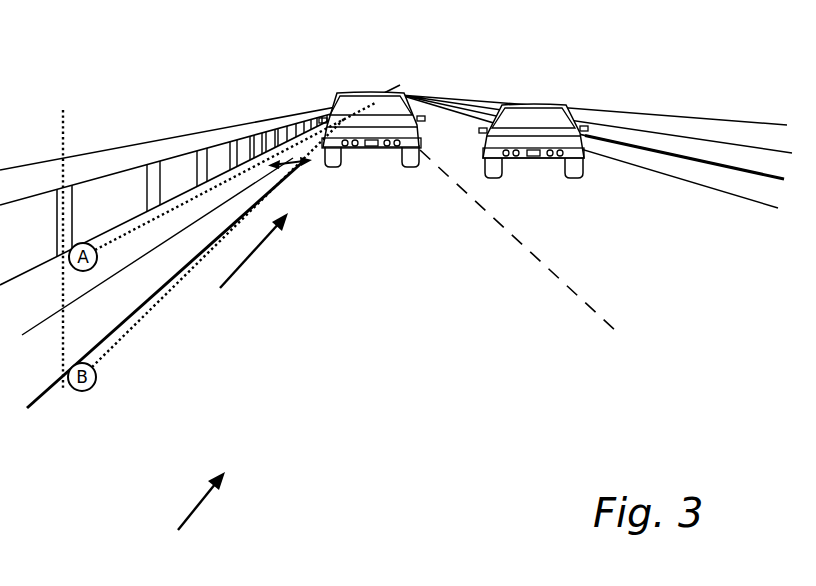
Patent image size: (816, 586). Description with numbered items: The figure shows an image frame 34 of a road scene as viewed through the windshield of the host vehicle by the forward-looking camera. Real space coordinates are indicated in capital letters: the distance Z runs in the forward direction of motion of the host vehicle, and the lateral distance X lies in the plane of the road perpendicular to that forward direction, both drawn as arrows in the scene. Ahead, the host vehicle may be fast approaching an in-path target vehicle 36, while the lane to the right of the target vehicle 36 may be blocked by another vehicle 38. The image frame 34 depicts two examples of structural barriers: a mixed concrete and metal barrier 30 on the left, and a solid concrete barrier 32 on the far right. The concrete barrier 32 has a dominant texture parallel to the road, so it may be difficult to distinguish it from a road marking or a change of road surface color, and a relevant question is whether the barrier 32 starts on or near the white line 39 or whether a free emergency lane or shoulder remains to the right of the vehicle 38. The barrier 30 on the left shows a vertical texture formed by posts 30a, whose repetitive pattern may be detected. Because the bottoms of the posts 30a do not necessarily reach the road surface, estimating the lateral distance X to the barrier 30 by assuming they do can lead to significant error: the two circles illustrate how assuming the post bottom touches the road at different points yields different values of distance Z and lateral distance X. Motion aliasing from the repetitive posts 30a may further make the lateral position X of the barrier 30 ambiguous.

The barrier 30 is at (204, 126).
The posts 30a is at (75, 209).
The concrete barrier 32 is at (617, 120).
The image frame 34 is at (186, 517).
The target vehicle 36 is at (386, 102).
The vehicle 38 is at (540, 105).
The white line 39 is at (750, 203).
The lateral distance X is at (294, 166).
The distance Z is at (257, 250).